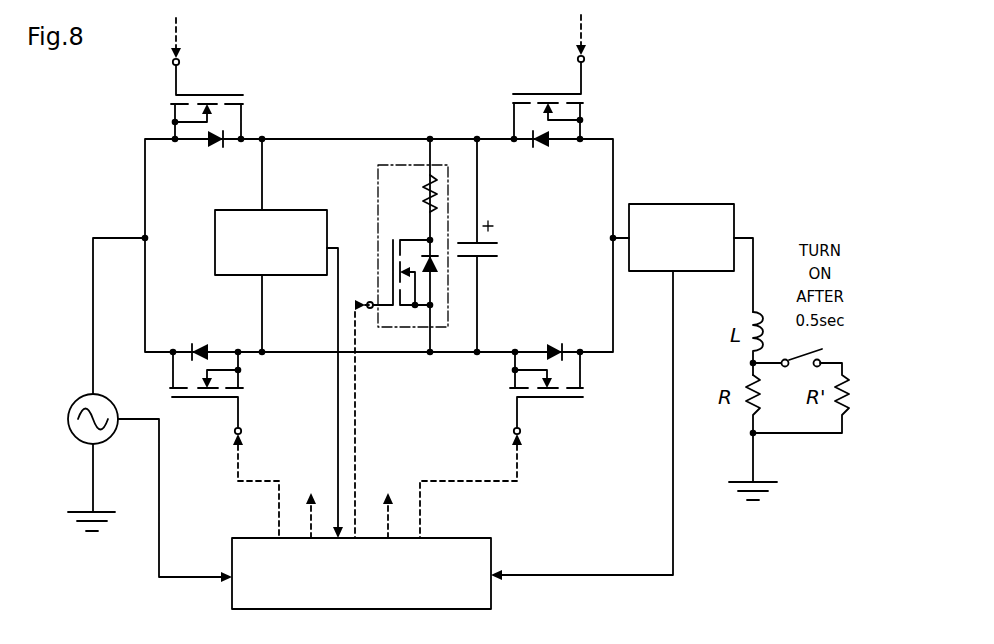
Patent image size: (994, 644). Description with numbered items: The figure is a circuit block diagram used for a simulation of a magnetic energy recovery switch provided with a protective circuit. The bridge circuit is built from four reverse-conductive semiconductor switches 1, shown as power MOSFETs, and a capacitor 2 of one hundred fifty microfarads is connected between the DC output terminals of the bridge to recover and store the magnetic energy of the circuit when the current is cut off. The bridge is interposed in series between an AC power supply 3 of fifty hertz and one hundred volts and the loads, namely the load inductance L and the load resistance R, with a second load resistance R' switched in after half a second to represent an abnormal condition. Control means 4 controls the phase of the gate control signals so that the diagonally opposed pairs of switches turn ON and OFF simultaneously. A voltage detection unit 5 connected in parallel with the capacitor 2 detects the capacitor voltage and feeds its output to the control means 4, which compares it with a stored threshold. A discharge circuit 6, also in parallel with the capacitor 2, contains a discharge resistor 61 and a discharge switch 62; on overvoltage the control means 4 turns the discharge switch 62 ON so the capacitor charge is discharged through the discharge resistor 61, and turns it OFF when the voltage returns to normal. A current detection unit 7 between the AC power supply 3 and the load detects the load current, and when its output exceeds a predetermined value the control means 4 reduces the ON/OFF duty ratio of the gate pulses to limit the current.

The semiconductor switch 1 is at (230, 88).
The capacitor 2 is at (500, 247).
The AC power supply 3 is at (72, 437).
The control means 4 is at (492, 552).
The voltage detection unit 5 is at (240, 277).
The discharge circuit 6 is at (394, 303).
The discharge resistor 61 is at (419, 193).
The discharge switch 62 is at (405, 232).
The current detection unit 7 is at (735, 215).